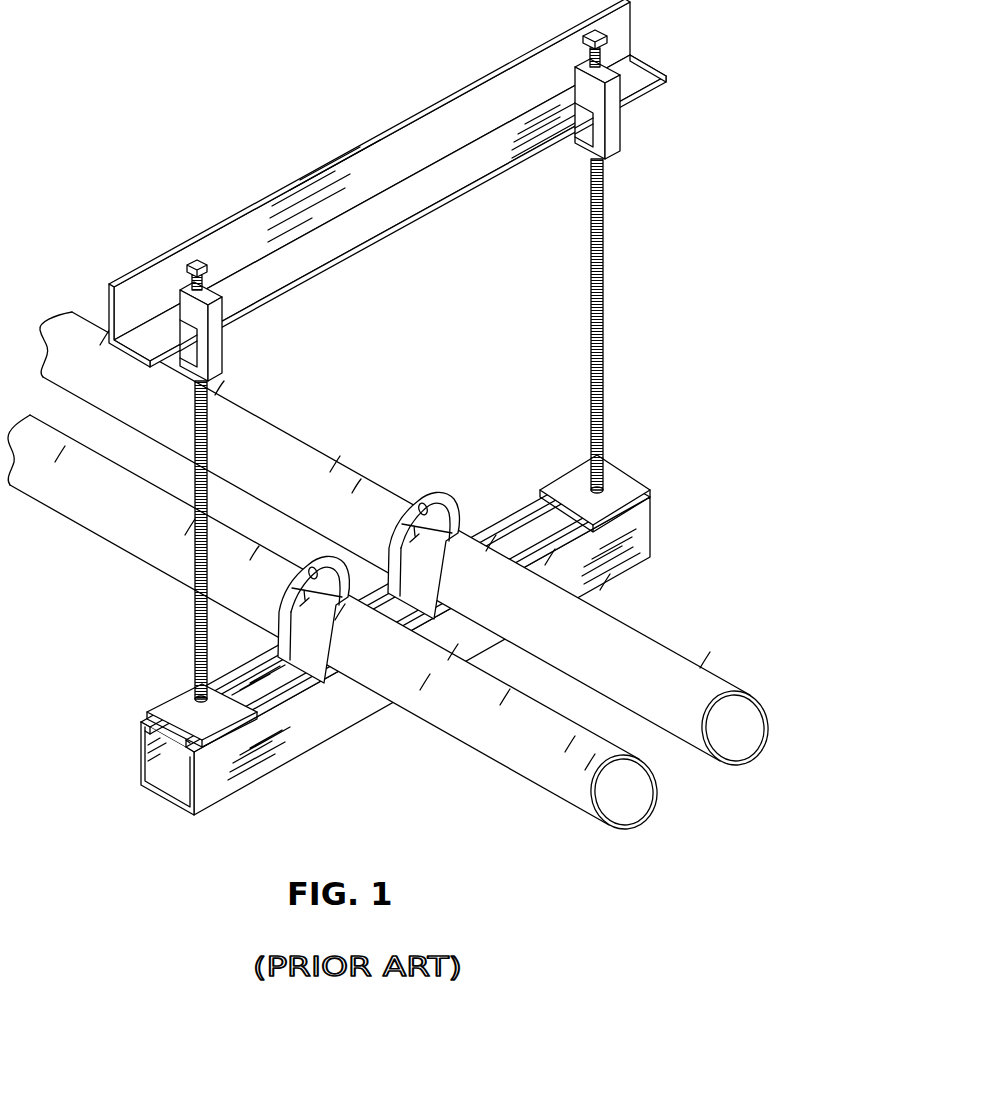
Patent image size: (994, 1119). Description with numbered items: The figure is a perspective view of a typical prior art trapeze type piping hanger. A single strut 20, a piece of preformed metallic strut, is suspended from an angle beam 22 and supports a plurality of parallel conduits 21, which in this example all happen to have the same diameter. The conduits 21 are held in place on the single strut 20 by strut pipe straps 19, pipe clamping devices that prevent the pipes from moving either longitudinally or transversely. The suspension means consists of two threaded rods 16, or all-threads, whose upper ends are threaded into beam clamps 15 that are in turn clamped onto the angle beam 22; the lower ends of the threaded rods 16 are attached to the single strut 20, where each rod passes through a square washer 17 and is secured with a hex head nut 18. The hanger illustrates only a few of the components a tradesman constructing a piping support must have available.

The beam clamp 15 is at (218, 347).
The threaded rod 16 is at (196, 628).
The square washer 17 is at (150, 704).
The hex head nut 18 is at (183, 708).
The strut pipe strap 19 is at (336, 556).
The single strut 20 is at (640, 540).
The conduit 21 is at (766, 712).
The angle beam 22 is at (652, 72).